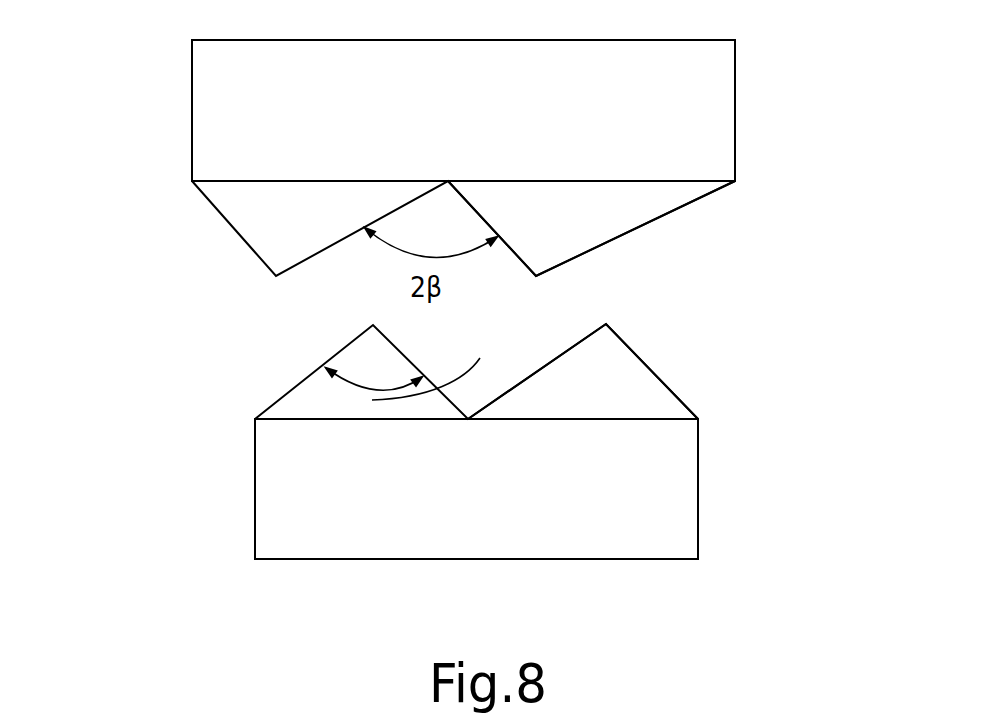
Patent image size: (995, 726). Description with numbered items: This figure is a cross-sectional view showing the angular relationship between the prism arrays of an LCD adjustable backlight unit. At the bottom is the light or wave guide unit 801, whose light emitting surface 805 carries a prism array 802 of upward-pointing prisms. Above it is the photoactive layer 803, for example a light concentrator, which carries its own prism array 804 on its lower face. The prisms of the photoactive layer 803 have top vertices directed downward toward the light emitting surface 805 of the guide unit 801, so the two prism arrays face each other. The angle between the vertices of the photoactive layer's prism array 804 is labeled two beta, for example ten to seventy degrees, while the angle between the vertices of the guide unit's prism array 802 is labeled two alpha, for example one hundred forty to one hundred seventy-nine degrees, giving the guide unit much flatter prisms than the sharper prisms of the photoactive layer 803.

The guide unit 801 is at (698, 507).
The prism array 802 is at (688, 407).
The photoactive layer 803 is at (735, 108).
The prism array 804 is at (230, 227).
The light emitting surface 805 is at (205, 420).